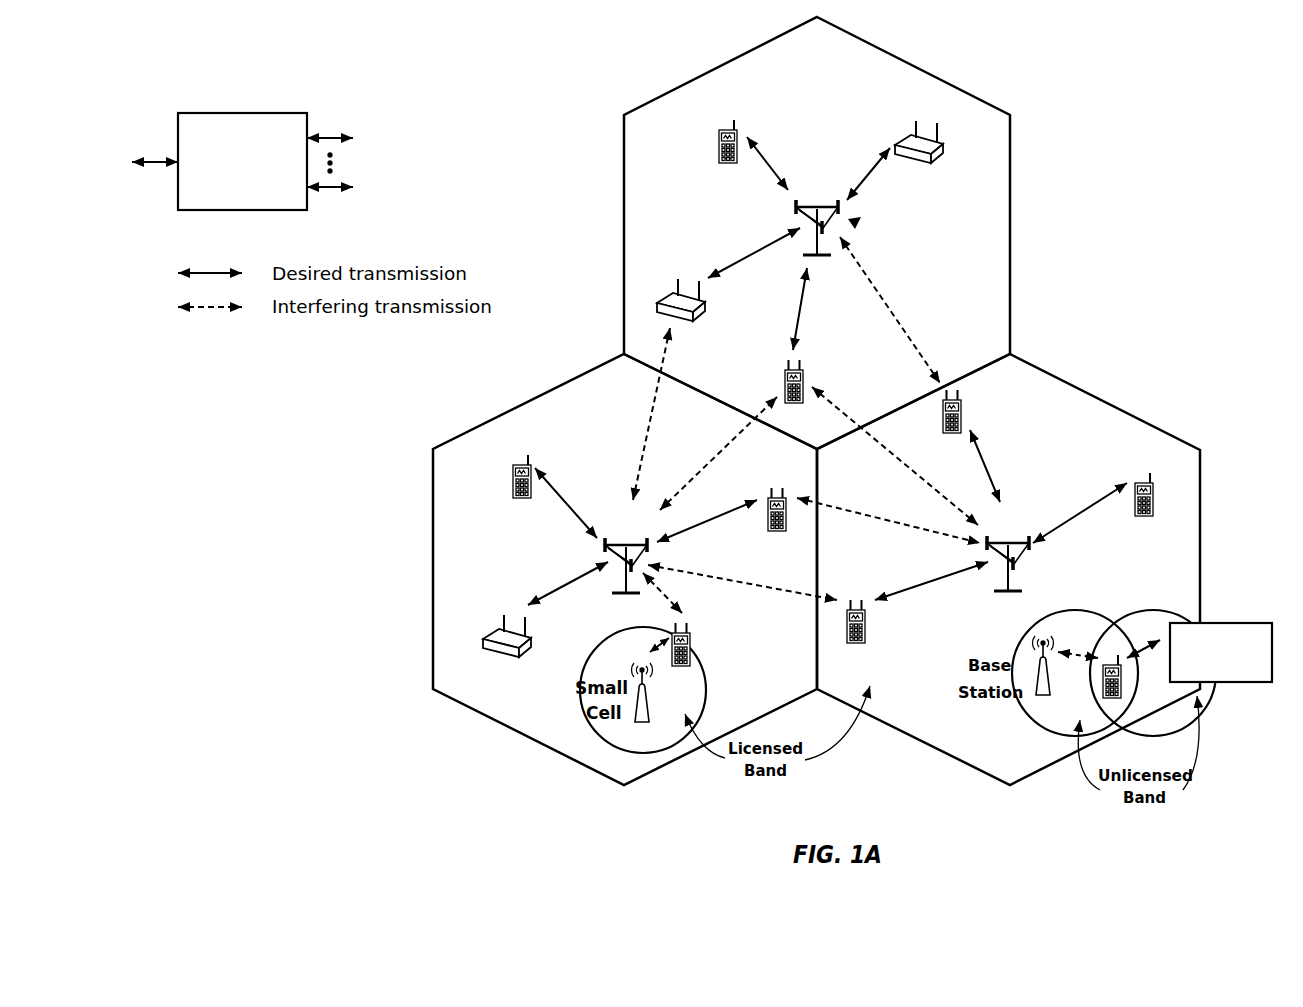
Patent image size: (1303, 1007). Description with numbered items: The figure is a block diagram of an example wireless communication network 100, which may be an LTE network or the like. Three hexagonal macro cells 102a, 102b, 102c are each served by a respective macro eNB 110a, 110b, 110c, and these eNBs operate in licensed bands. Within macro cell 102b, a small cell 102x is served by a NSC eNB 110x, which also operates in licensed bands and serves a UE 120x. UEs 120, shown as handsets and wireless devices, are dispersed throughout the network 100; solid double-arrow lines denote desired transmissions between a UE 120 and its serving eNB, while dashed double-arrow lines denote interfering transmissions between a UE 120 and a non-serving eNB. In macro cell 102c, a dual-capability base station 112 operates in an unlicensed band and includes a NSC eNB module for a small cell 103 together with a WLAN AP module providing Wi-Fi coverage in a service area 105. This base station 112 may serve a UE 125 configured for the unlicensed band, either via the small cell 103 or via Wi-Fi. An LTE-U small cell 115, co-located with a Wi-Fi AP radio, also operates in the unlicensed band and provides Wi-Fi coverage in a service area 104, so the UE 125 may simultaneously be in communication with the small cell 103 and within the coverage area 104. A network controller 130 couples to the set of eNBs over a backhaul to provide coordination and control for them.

The wireless communication network 100 is at (1141, 91).
The macro cell 102a is at (927, 55).
The macro cell 102b is at (526, 402).
The macro cell 102c is at (1108, 402).
The NSC 102x is at (598, 648).
The NSC 103 is at (1040, 673).
The service area 104 is at (1154, 611).
The service area 105 is at (1012, 645).
The eNB 110a is at (813, 206).
The eNB 110b is at (626, 543).
The eNB 110c is at (1010, 541).
The NSC eNB 110x is at (650, 715).
The base station 112 is at (1050, 690).
The LTE-U small cell 115 is at (1272, 683).
The UE 120 is at (719, 136).
The UE 120x is at (690, 645).
The UE 125 is at (1103, 692).
The network controller 130 is at (241, 113).